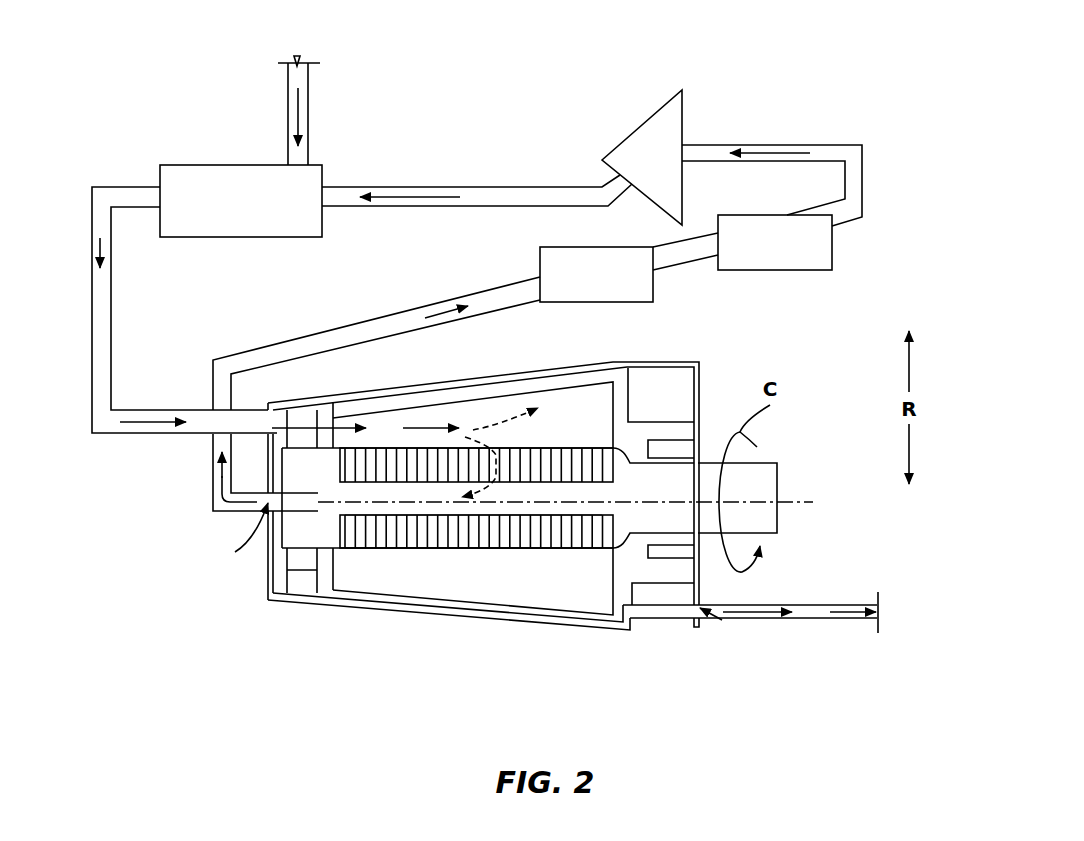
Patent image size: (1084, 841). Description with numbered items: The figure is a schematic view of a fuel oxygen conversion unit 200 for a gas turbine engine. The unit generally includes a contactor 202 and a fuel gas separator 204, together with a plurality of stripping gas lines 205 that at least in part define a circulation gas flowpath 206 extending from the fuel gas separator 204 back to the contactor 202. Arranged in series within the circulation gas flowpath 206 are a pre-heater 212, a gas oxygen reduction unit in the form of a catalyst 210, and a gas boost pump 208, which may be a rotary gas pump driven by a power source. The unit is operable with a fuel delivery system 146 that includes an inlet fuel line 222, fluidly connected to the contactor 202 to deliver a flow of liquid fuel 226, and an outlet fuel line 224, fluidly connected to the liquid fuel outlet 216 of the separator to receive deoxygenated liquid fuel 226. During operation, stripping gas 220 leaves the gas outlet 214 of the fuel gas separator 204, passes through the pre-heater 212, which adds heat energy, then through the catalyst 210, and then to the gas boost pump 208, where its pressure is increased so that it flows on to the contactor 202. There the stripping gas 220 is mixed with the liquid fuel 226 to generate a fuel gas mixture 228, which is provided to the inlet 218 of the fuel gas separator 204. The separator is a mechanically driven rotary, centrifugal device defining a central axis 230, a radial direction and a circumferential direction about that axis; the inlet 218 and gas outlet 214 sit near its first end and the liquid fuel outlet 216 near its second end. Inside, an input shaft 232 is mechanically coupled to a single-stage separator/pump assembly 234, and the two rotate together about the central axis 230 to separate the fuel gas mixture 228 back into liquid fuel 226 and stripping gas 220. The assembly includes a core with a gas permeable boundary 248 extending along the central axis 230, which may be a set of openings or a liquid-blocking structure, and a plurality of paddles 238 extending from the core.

The fuel oxygen conversion unit 200 is at (888, 76).
The fuel delivery system 146 is at (351, 70).
The contactor 202 is at (205, 165).
The fuel gas separator 204 is at (451, 650).
The stripping gas line 205 is at (480, 187).
The circulation gas flowpath 206 is at (539, 189).
The gas boost pump 208 is at (653, 113).
The catalyst 210 is at (800, 271).
The pre-heater 212 is at (617, 302).
The gas outlet 214 is at (229, 534).
The liquid fuel outlet 216 is at (727, 619).
The inlet 218 is at (261, 418).
The stripping gas 220 is at (403, 190).
The inlet fuel line 222 is at (300, 118).
The outlet fuel line 224 is at (816, 605).
The liquid fuel 226 is at (300, 118).
The fuel gas mixture 228 is at (100, 237).
The central axis 230 is at (760, 500).
The input shaft 232 is at (697, 470).
The single-stage separator/pump assembly 234 is at (546, 371).
The paddles 238 is at (502, 410).
The gas permeable boundary 248 is at (430, 540).